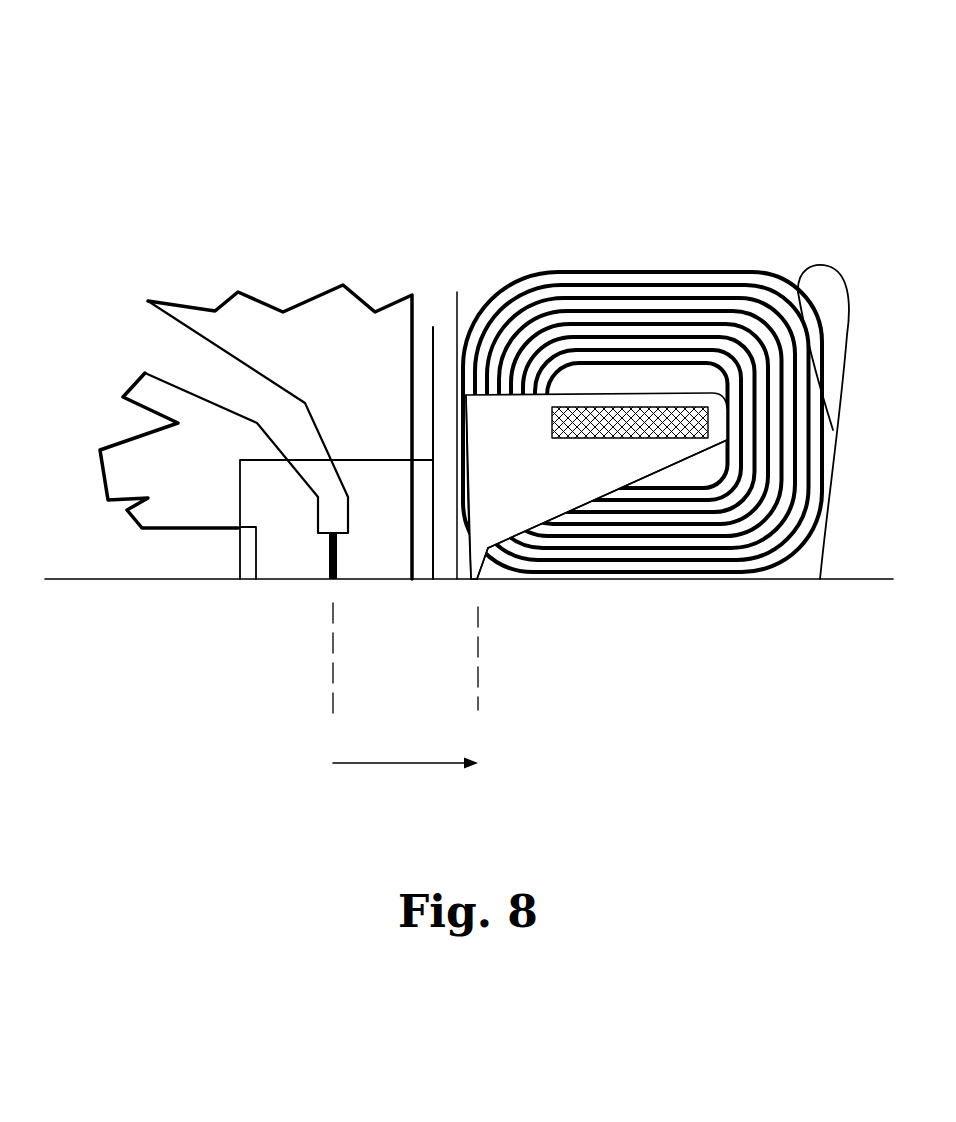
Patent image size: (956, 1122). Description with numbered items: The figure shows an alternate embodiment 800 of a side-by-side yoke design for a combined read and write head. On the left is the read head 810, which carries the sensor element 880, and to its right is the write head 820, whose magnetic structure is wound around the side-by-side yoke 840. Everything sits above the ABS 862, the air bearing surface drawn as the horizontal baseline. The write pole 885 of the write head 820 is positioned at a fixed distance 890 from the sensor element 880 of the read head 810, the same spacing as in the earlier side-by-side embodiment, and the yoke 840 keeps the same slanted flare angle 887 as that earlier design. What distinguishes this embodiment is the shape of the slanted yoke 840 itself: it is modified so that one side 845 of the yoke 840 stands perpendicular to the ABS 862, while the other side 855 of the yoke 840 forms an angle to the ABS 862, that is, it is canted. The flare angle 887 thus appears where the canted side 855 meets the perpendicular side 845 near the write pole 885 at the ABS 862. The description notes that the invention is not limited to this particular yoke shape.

The alternate embodiment of side-by-side yoke design 800 is at (652, 70).
The read head 810 is at (282, 300).
The write head 820 is at (611, 252).
The side-by-side yoke 840 is at (553, 494).
The one side of the yoke 845 is at (475, 464).
The another side of the yoke 855 is at (608, 490).
The ABS 862 is at (808, 579).
The sensor element 880 is at (328, 580).
The write pole 885 is at (475, 579).
The slanted flare angle 887 is at (505, 568).
The distance 890 is at (407, 765).